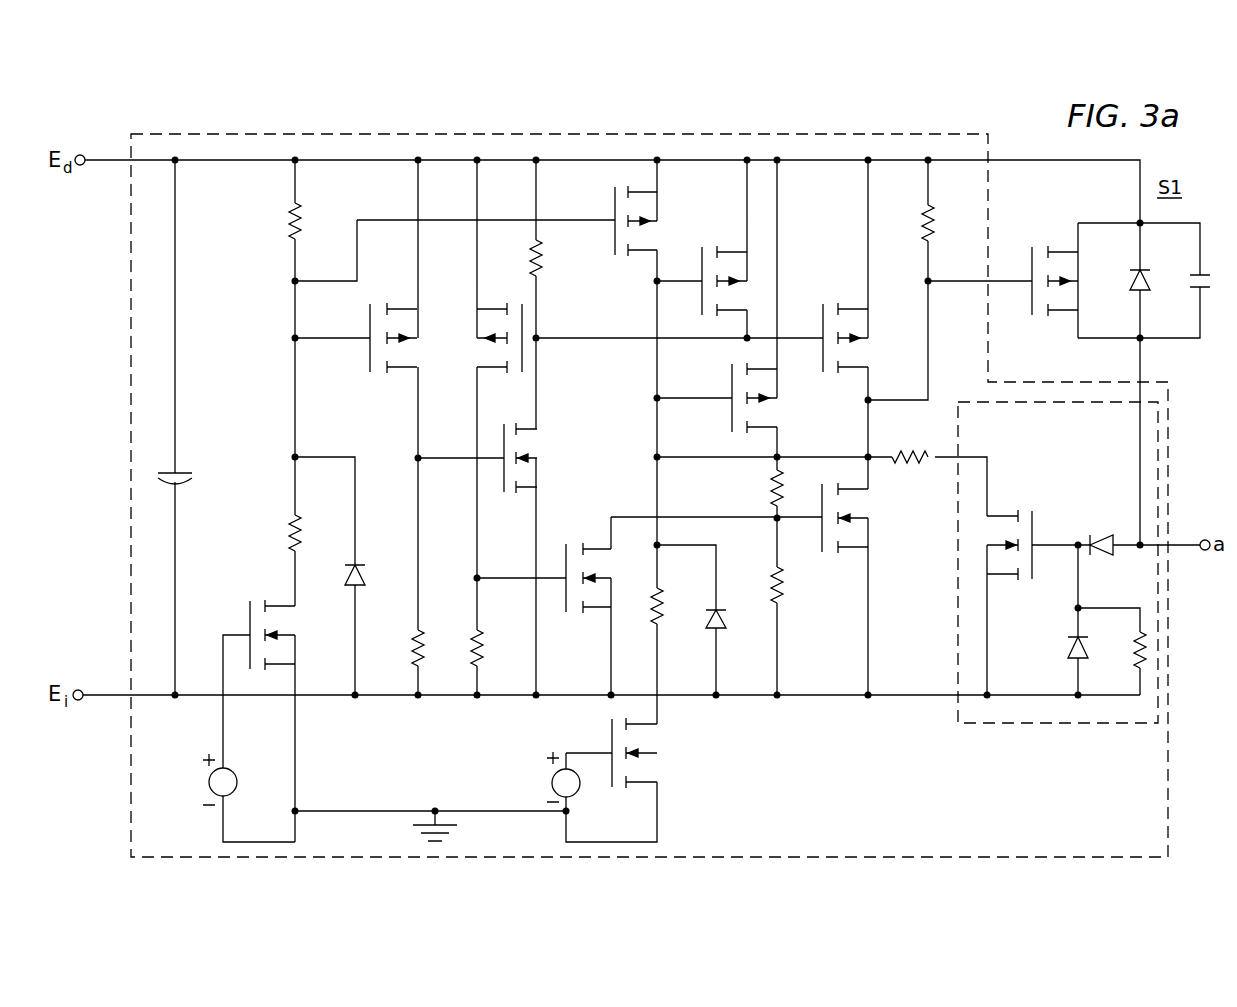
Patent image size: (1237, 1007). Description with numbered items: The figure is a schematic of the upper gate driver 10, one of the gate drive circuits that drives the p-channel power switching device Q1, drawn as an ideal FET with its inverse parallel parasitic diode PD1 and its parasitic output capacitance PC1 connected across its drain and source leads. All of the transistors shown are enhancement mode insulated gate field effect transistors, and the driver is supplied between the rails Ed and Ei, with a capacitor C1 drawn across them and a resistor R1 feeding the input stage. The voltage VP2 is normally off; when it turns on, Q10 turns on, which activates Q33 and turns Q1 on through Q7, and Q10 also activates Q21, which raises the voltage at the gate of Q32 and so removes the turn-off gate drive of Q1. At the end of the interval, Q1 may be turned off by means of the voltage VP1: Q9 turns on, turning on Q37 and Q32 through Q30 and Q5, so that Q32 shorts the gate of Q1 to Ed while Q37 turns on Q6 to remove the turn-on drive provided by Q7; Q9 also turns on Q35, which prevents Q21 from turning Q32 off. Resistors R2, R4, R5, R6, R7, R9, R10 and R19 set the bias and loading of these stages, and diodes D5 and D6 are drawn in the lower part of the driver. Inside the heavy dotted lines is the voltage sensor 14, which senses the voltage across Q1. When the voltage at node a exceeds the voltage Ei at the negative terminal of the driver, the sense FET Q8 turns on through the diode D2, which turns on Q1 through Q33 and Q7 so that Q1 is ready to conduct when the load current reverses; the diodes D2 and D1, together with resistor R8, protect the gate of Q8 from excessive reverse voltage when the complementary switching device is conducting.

The upper gate driver 10 is at (649, 474).
The voltage sensor 14 is at (1058, 592).
The ideal FET switch Q1 is at (1048, 304).
The transistor Q5 is at (518, 480).
The transistor Q6 is at (606, 578).
The transistor Q7 is at (863, 518).
The sense FET Q8 is at (1009, 522).
The transistor Q9 is at (291, 635).
The transistor Q10 is at (660, 753).
The transistor Q21 is at (703, 287).
The transistor Q30 is at (389, 359).
The transistor Q32 is at (865, 338).
The transistor Q33 is at (775, 398).
The transistor Q35 is at (657, 221).
The transistor Q37 is at (503, 359).
The resistor R1 is at (309, 221).
The resistor R2 is at (550, 258).
The resistor R4 is at (432, 648).
The resistor R5 is at (491, 648).
The resistor R6 is at (791, 488).
The resistor R7 is at (791, 585).
The resistor R8 is at (1123, 650).
The resistor R9 is at (309, 533).
The resistor R10 is at (677, 606).
The resistor R19 is at (948, 223).
The diode D1 is at (1065, 649).
The diode D2 is at (1101, 531).
The diode D5 is at (370, 575).
The diode D6 is at (731, 620).
The parasitic diode PD1 is at (1156, 290).
The capacitor C1 is at (191, 479).
The parasitic capacitance PC1 is at (1213, 293).
The voltage VP1 is at (240, 779).
The voltage VP2 is at (544, 777).